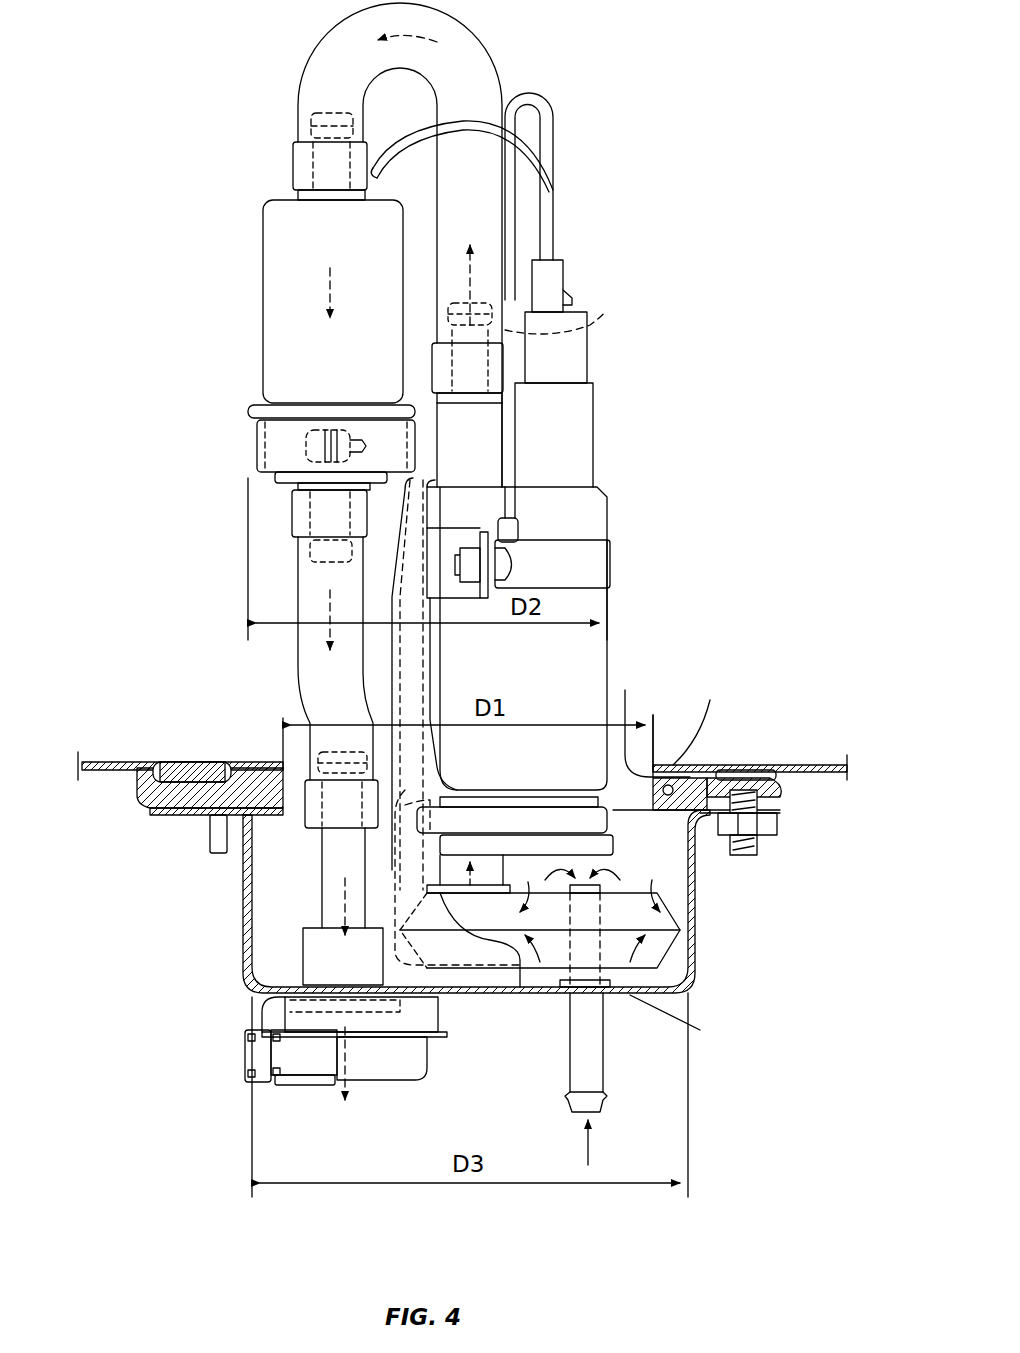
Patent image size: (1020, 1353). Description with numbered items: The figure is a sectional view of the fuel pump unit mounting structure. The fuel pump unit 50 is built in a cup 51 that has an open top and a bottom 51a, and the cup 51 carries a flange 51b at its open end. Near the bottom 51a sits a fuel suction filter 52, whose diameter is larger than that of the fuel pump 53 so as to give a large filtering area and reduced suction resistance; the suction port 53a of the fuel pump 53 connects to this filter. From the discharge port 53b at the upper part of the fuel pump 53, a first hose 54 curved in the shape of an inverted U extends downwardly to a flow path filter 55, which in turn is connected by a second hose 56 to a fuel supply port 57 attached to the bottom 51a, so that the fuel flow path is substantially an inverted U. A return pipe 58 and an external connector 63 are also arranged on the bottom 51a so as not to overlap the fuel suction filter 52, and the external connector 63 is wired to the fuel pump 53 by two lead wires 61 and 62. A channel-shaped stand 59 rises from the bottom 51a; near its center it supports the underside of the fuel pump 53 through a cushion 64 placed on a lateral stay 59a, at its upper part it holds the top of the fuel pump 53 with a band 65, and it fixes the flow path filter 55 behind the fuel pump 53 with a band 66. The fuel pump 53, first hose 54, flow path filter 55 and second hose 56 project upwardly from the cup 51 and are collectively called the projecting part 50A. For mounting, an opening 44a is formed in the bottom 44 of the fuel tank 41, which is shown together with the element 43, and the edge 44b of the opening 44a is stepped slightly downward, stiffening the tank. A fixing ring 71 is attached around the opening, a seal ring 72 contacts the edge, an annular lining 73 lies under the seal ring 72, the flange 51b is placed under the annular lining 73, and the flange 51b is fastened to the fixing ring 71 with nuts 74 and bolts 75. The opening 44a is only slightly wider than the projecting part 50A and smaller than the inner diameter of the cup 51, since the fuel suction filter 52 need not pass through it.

The projecting part 50A is at (122, 8).
The fuel pump unit 50 is at (557, 78).
The first hose 54 is at (327, 62).
The lead wire 62 is at (548, 127).
The lead wire 61 is at (537, 153).
The flow path filter 55 is at (272, 273).
The band 66 is at (262, 442).
The second hose 56 is at (298, 658).
The fuel supply port 57 is at (305, 960).
The discharge port 53b is at (537, 366).
The fuel pump 53 is at (585, 658).
The band 65 is at (600, 560).
The stand 59 is at (437, 690).
The suction port 53a is at (478, 790).
The cushion 64 is at (605, 845).
The lateral stay 59a is at (660, 925).
The return pipe 58 is at (593, 1062).
The cup 51 is at (700, 1000).
The fuel suction filter 52 is at (705, 978).
The bottom 51a is at (660, 1000).
The flange 51b is at (775, 815).
The fuel tank 41 is at (108, 778).
The frame member 43 is at (175, 866).
The fixing ring 71 is at (170, 768).
The bottom 44 is at (822, 775).
The opening 44a is at (630, 722).
The edge 44b is at (710, 700).
The seal ring 72 is at (713, 765).
The annular lining 73 is at (780, 800).
The bolt 75 is at (762, 840).
The nut 74 is at (748, 856).
The external connector 63 is at (262, 1055).